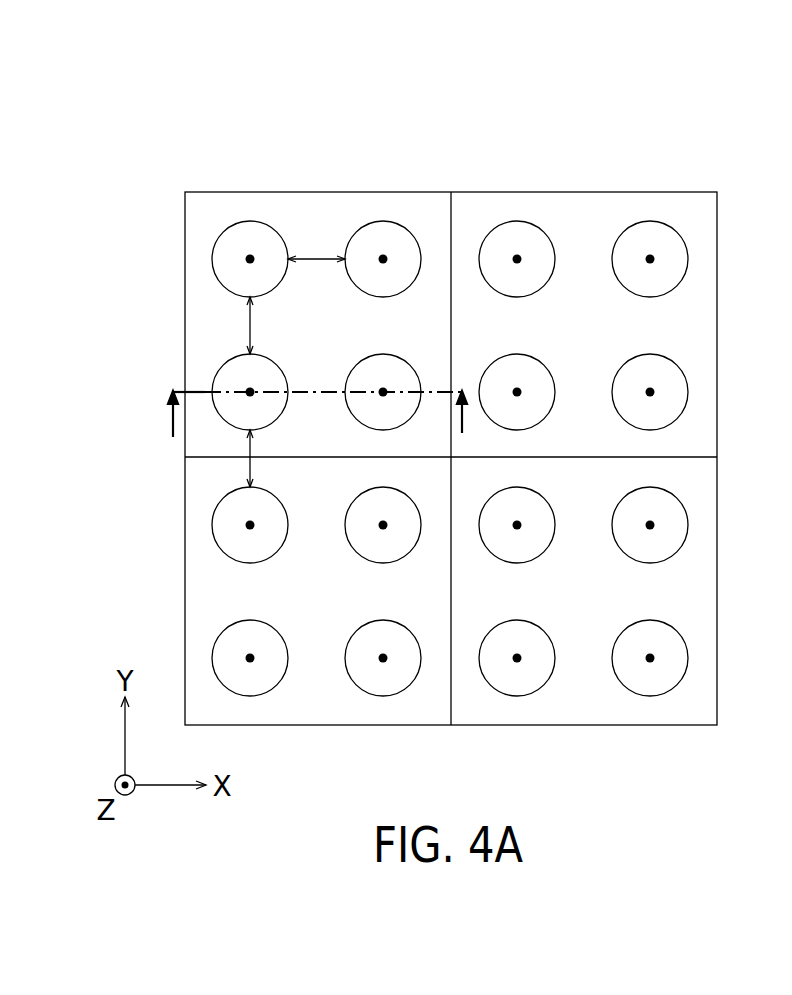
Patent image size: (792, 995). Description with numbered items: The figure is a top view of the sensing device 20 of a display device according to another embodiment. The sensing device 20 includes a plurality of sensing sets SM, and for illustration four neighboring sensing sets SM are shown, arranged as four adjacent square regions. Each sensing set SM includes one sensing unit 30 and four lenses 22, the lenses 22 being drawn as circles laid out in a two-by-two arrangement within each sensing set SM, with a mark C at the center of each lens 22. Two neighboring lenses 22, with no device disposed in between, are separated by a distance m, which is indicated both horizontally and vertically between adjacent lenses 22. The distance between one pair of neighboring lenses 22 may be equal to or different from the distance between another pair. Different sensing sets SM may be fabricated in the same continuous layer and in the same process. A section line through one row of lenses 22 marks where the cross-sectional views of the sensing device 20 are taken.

The sensing device 20 is at (436, 420).
The sensing unit 30 is at (316, 205).
The lenses 22 is at (263, 252).
The sensing set SM is at (185, 212).
The center of light emitting unit C is at (655, 258).
The distance m is at (283, 359).